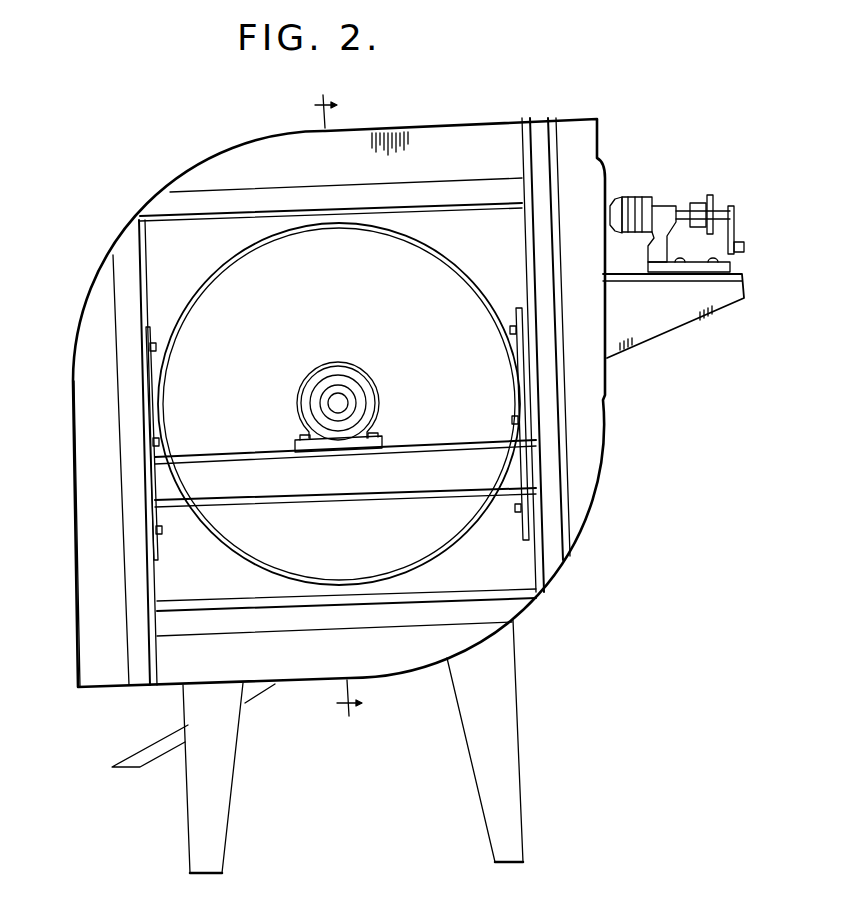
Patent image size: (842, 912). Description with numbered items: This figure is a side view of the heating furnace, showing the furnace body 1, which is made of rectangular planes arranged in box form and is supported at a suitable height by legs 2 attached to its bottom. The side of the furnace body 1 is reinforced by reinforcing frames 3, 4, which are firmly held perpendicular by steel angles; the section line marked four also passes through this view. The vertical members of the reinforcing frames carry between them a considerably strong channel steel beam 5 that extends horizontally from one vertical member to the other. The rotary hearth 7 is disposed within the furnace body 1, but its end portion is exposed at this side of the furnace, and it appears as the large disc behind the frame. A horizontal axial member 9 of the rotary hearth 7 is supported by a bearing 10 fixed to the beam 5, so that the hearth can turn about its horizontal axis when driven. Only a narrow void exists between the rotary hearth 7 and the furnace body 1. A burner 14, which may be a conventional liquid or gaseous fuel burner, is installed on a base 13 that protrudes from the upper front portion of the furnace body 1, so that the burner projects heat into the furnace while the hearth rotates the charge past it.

The furnace body 1 is at (585, 428).
The legs 2 is at (205, 817).
The reinforcing frame 3 is at (553, 519).
The reinforcing frame 4 is at (338, 406).
The channel steel beam 5 is at (252, 470).
The rotary hearth 7 is at (440, 296).
The axial member 9 is at (336, 400).
The bearing 10 is at (345, 382).
The base 13 is at (652, 310).
The burner 14 is at (642, 210).